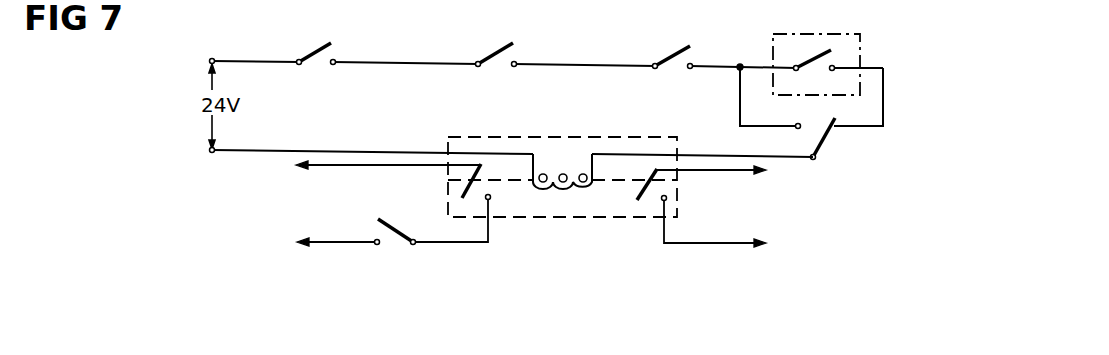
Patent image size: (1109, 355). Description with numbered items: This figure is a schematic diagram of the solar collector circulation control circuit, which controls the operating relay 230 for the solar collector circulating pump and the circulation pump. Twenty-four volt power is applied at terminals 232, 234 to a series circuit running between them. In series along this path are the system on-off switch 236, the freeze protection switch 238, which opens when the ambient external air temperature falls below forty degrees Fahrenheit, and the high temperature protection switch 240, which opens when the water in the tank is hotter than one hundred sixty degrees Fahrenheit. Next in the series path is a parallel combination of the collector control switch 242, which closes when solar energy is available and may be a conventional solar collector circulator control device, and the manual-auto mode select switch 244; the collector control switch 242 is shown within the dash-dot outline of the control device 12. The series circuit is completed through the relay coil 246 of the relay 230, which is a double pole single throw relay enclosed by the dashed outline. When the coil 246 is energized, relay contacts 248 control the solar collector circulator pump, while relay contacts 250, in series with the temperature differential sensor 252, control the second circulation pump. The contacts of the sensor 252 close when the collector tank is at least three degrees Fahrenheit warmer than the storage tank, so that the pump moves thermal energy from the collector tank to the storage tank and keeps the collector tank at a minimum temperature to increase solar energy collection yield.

The controller 12 is at (861, 50).
The operating relay 230 is at (575, 220).
The terminal 232 is at (207, 150).
The terminal 234 is at (207, 61).
The system on-off switch 236 is at (316, 52).
The freeze protection switch 238 is at (497, 49).
The high temperature protection switch 240 is at (676, 49).
The collector control switch 242 is at (815, 55).
The manual-auto mode select switch 244 is at (824, 142).
The relay coil 246 is at (565, 165).
The relay contacts 248 is at (660, 180).
The relay contacts 250 is at (466, 181).
The temperature differential sensor 252 is at (393, 232).